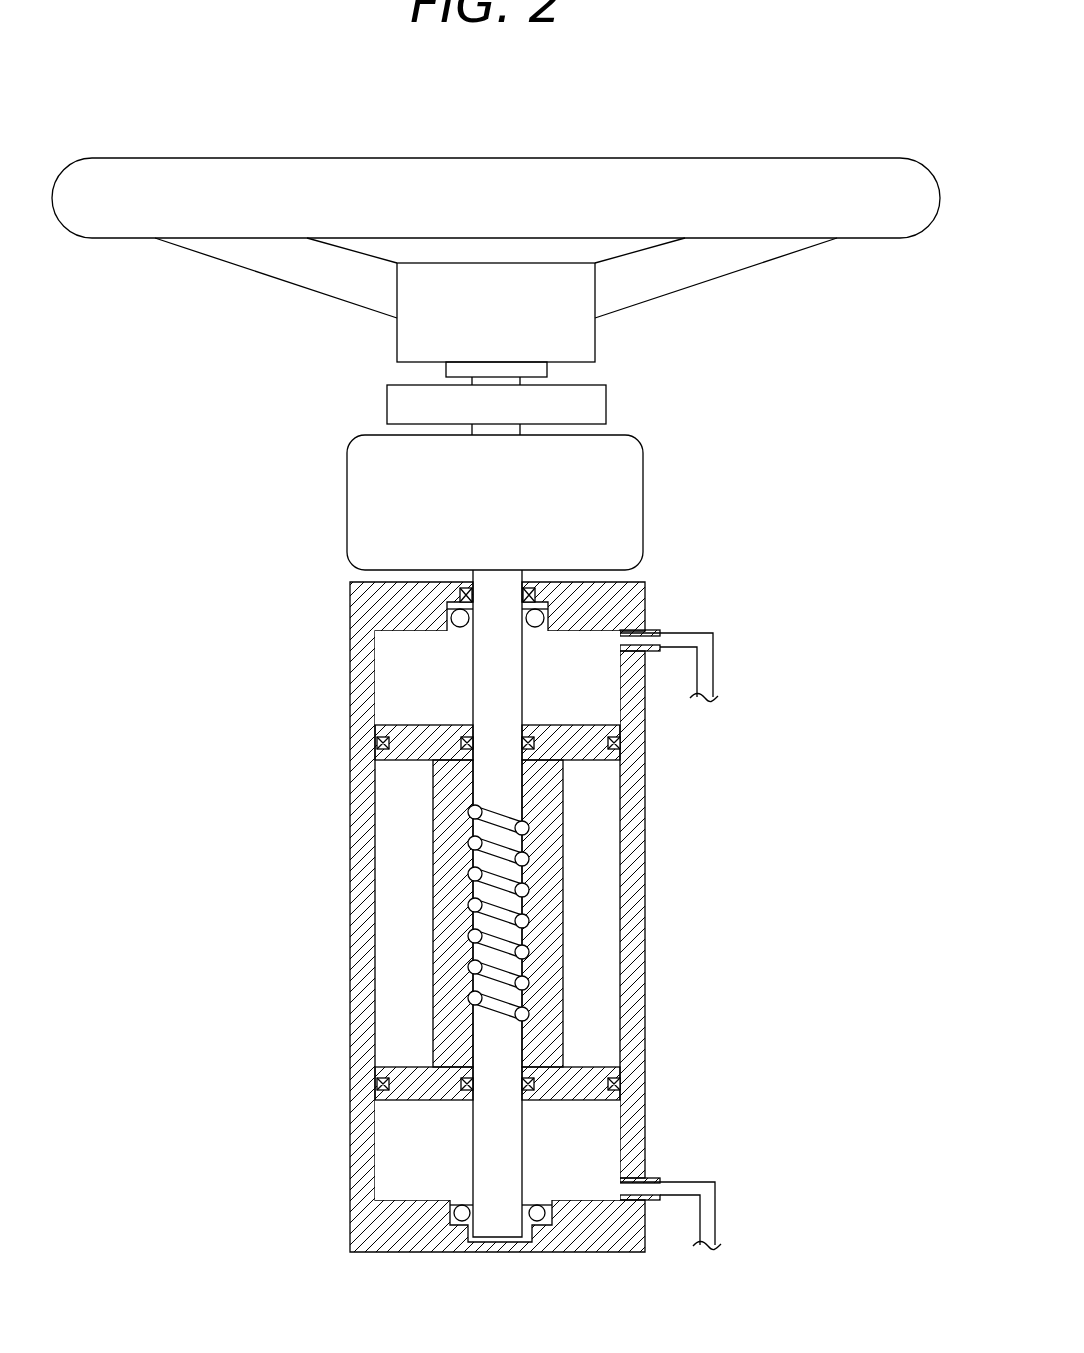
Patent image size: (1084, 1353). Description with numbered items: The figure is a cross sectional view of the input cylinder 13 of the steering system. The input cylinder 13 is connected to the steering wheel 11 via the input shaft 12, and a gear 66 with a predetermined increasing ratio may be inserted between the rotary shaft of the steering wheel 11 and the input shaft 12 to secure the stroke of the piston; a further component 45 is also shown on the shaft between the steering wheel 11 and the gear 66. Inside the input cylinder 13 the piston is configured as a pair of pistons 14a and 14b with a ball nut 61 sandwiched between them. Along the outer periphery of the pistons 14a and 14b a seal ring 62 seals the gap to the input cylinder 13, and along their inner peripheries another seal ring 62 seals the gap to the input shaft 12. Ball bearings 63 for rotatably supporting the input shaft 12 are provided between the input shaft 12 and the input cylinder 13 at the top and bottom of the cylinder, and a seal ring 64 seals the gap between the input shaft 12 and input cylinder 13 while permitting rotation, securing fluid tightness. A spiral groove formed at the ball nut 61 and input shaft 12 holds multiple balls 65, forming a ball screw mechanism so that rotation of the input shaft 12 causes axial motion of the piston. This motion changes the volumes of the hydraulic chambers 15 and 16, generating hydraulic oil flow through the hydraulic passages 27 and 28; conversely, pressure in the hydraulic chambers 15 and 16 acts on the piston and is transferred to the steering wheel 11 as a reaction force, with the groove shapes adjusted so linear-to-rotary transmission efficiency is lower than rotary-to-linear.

The steering wheel 11 is at (210, 220).
The input shaft 12 is at (487, 676).
The input cylinder 13 is at (645, 935).
The piston 14a is at (622, 762).
The piston 14b is at (405, 1067).
The hydraulic chamber 15 is at (583, 700).
The hydraulic chamber 16 is at (600, 1138).
The hydraulic passage 27 is at (715, 660).
The hydraulic passage 28 is at (715, 1190).
The steering angle sensor 45 is at (387, 400).
The ball nut 61 is at (447, 918).
The seal ring 62 is at (378, 743).
The ball bearing 63 is at (450, 1203).
The seal ring 64 is at (537, 598).
The ball 65 is at (525, 890).
The gear 66 is at (627, 463).